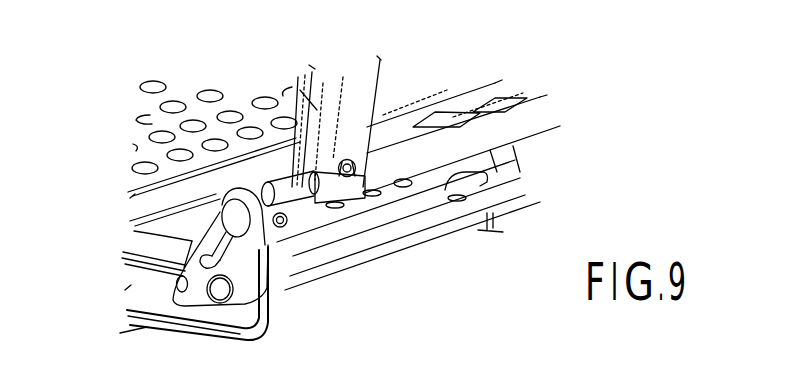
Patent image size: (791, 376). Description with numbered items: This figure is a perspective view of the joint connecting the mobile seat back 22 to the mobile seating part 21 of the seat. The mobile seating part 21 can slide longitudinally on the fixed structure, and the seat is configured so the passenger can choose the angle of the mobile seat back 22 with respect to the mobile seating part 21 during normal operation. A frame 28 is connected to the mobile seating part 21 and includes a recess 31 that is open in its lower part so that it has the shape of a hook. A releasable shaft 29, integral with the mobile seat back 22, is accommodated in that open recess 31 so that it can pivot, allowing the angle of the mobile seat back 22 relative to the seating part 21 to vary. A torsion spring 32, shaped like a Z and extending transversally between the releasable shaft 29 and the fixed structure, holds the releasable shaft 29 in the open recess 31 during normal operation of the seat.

The mobile seating part 21 is at (137, 134).
The mobile seat back 22 is at (302, 96).
The frame 28 is at (138, 284).
The releasable shaft 29 is at (517, 123).
The recess 31 is at (278, 250).
The torsion spring 32 is at (418, 197).